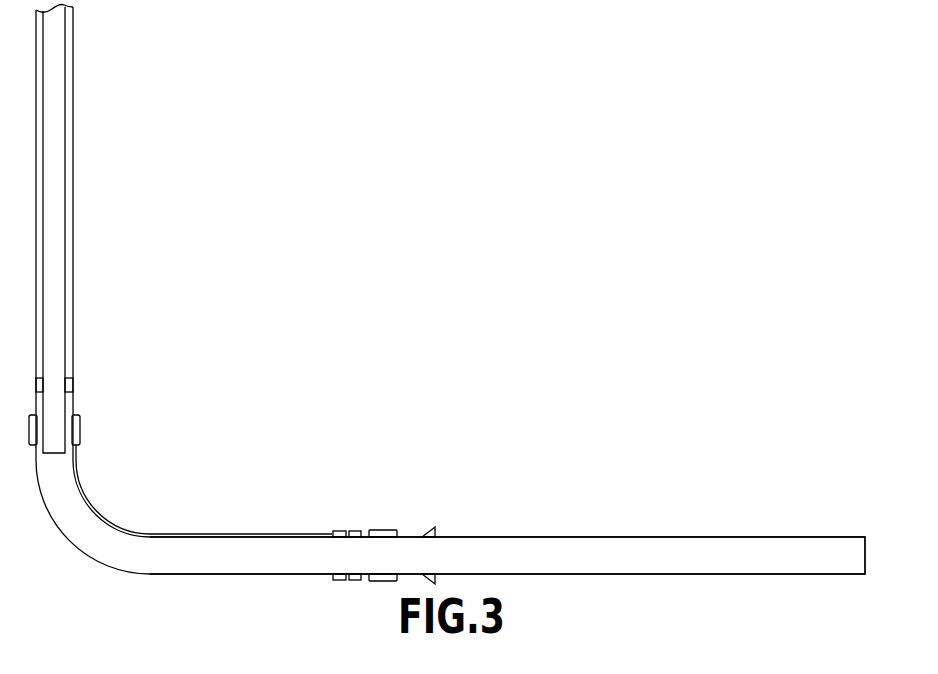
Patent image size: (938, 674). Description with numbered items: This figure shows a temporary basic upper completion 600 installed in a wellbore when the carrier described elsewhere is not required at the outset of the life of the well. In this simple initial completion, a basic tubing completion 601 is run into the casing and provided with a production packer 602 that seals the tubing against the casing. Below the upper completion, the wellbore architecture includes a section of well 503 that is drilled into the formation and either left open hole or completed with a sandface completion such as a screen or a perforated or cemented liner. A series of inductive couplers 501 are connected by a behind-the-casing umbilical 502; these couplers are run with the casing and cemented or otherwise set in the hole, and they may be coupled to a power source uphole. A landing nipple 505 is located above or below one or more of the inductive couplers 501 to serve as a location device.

The temporary basic upper completion 600 is at (57, 181).
The basic tubing completion 601 is at (73, 247).
The production packer 602 is at (69, 385).
The inductive coupler 501 is at (78, 431).
The behind-the-casing umbilical 502 is at (216, 533).
The landing nipple 505 is at (356, 532).
The section of well 503 is at (650, 537).